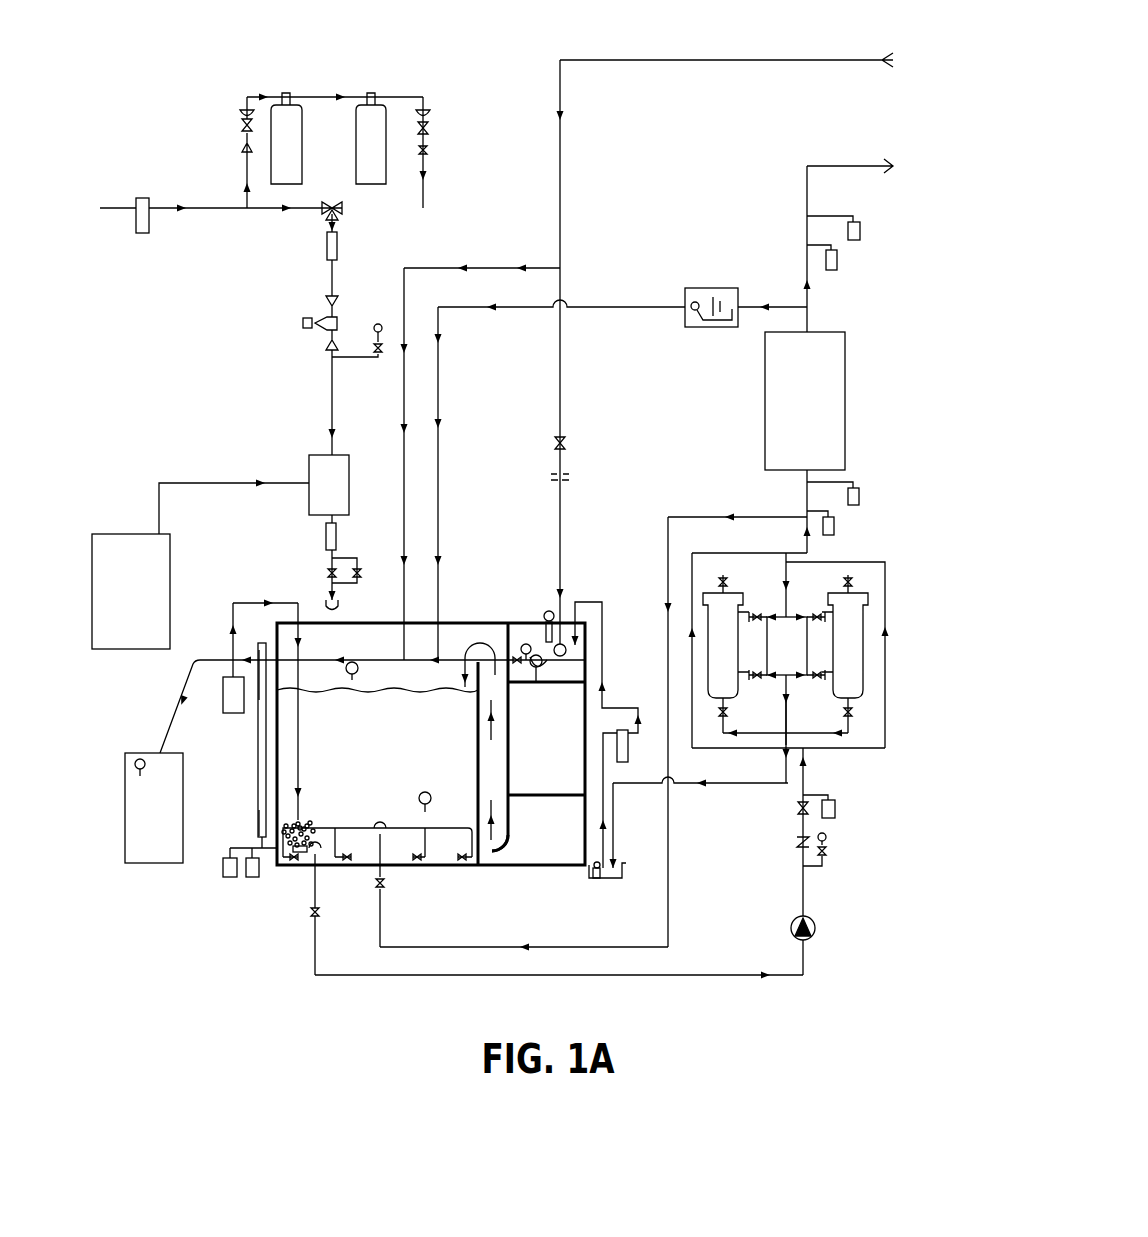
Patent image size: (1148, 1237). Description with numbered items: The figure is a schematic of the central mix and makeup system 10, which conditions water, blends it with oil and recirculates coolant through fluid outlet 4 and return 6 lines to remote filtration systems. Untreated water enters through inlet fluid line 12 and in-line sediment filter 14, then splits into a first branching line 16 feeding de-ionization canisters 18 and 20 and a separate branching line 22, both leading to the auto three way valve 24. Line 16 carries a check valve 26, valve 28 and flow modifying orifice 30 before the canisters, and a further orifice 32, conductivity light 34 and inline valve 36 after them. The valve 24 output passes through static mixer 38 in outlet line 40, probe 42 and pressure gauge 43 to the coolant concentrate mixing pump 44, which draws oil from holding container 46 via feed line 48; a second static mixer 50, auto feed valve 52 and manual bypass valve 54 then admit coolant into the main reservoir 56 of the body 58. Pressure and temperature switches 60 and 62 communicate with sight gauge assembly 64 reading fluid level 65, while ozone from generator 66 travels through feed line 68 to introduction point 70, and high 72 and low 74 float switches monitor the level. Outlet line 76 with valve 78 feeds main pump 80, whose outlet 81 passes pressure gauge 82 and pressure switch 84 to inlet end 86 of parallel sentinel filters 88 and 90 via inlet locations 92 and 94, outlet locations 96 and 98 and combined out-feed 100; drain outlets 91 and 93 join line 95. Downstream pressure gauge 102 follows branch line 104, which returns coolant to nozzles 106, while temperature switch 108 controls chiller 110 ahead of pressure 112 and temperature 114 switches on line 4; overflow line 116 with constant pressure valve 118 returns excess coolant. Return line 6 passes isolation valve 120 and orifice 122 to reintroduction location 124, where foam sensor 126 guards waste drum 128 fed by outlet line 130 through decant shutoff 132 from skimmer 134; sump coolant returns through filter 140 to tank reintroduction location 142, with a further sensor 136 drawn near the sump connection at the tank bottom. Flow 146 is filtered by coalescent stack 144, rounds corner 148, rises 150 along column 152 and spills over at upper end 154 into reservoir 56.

The central mix and makeup system 10 is at (181, 19).
The fluid outlet line 4 is at (835, 166).
The return line 6 is at (752, 60).
The inlet fluid line 12 is at (100, 206).
The in-line sediment filter 14 is at (140, 198).
The first branching line 16 is at (245, 163).
The de-ionization canister 18 is at (292, 110).
The de-ionization canister 20 is at (378, 186).
The separate branching line 22 is at (263, 210).
The auto three way valve 24 is at (328, 213).
The check valve 26 is at (245, 150).
The valve 28 is at (245, 125).
The flow modifying orifice 30 is at (244, 112).
The flow modifying orifice 32 is at (426, 112).
The conductivity light 34 is at (430, 128).
The inline valve 36 is at (430, 151).
The inline static mixer 38 is at (338, 248).
The outlet line 40 is at (331, 279).
The in-line probe 42 is at (314, 326).
The pressure gauge 43 is at (373, 327).
The coolant concentrate mixing pump 44 is at (315, 458).
The holding container 46 is at (103, 534).
The feed line 48 is at (165, 497).
The in-line static mixer 50 is at (326, 540).
The auto feed valve 52 is at (328, 572).
The manual bypass valve 54 is at (360, 568).
The main fluid holding reservoir 56 is at (354, 761).
The three dimensional body 58 is at (283, 722).
The pressure switch 60 is at (252, 880).
The temperature switch 62 is at (221, 864).
The sight gauge assembly 64 is at (258, 822).
The fluid level 65 is at (262, 690).
The ozone generator/controller 66 is at (226, 691).
The feed line 68 is at (233, 612).
The introduction point 70 is at (307, 862).
The high float switch 72 is at (355, 662).
The low float switch 74 is at (420, 796).
The outlet line 76 is at (318, 900).
The valve 78 is at (312, 921).
The main operating pump 80 is at (809, 938).
The pump outlet 81 is at (803, 898).
The mechanical pressure gauge 82 is at (828, 853).
The automatic pressure switch 84 is at (836, 810).
The inlet end 86 is at (784, 605).
The sentinel filter 88 is at (712, 666).
The sentinel filter 90 is at (837, 666).
The drain fluid outlet 91 is at (722, 738).
The inlet location 92 is at (792, 613).
The drain fluid outlet 93 is at (848, 741).
The inlet location 94 is at (775, 620).
The drain line 95 is at (752, 785).
The outlet location 96 is at (790, 680).
The outlet location 98 is at (768, 678).
The combined out-feed 100 is at (796, 722).
The downstream pressure gauge 102 is at (835, 526).
The branch line 104 is at (700, 513).
The nozzles 106 is at (405, 862).
The temperature switch 108 is at (860, 496).
The chiller 110 is at (842, 386).
The pressure switch 112 is at (837, 266).
The temperature switch 114 is at (860, 233).
The overflow branching line 116 is at (780, 302).
The constant pressure valve 118 is at (685, 318).
The isolation valve 120 is at (555, 441).
The orifice 122 is at (553, 478).
The reintroduction location 124 is at (578, 654).
The foam sensor 126 is at (545, 613).
The run off waste drum 128 is at (143, 860).
The outlet line 130 is at (513, 657).
The decant line shutoff 132 is at (526, 644).
The waste oil skimmer 134 is at (535, 672).
The sensor 136 is at (601, 881).
The filter 140 is at (623, 765).
The tank reintroduction location 142 is at (588, 623).
The coalescent filter stack 144 is at (568, 720).
The fluid flow arrow 146 is at (497, 858).
The bottom disposed corner 148 is at (520, 830).
The upward direction 150 is at (478, 733).
The isolated column location 152 is at (476, 690).
The upper end location 154 is at (462, 672).